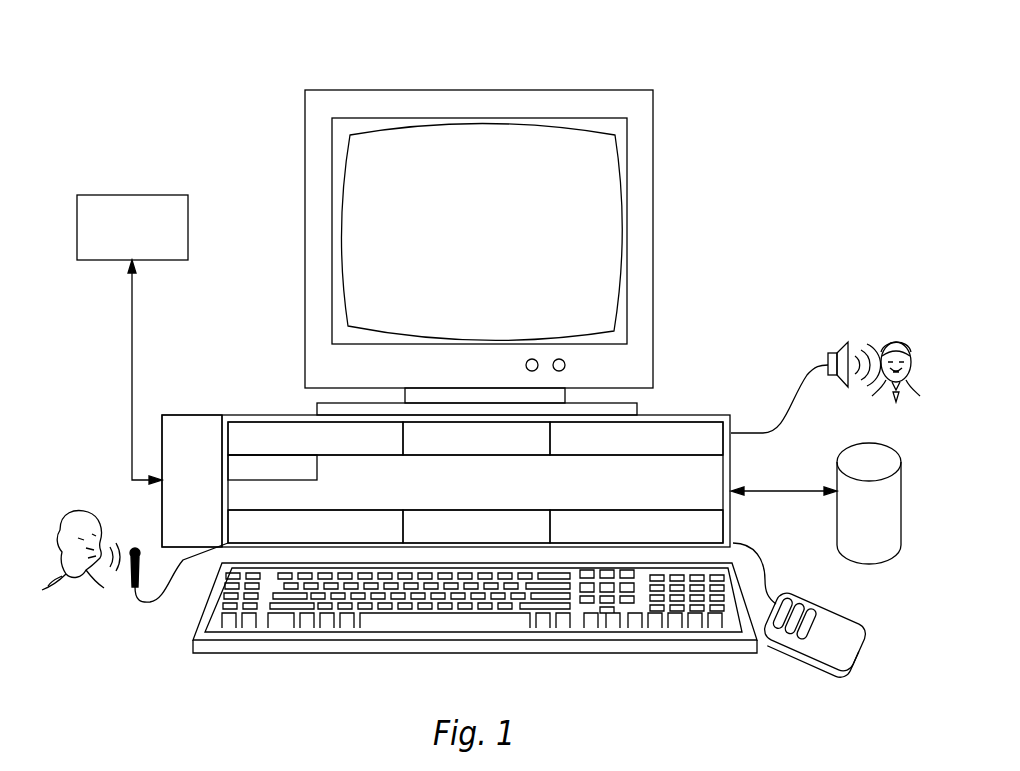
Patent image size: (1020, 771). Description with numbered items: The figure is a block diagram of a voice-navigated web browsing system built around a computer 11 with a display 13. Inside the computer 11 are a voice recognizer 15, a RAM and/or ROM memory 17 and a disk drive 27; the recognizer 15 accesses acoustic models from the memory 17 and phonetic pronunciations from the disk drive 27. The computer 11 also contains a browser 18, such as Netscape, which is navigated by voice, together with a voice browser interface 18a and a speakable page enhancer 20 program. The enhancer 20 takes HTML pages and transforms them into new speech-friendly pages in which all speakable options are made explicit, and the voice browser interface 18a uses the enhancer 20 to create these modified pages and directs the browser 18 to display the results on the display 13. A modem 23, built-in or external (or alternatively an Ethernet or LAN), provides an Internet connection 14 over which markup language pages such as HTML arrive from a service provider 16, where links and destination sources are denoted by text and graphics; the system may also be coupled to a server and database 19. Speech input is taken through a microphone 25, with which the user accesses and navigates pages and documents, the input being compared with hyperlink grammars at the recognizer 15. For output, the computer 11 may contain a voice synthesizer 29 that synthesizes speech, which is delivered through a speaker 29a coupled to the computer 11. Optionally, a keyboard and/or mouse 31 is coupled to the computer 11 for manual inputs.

The computer 11 is at (602, 495).
The display 13 is at (458, 90).
The Internet connection 14 is at (131, 325).
The voice recognizer 15 is at (245, 530).
The service provider 16 is at (132, 195).
The memory 17 is at (417, 517).
The browser 18 is at (280, 422).
The voice browser interface 18a is at (244, 458).
The server and database 19 is at (883, 563).
The speakable page enhancer 20 is at (413, 437).
The modem 23 is at (158, 500).
The microphone 25 is at (128, 578).
The disk drive 27 is at (720, 517).
The voice synthesizer 29 is at (700, 427).
The speaker 29a is at (830, 345).
The keyboard and/or mouse 31 is at (632, 648).